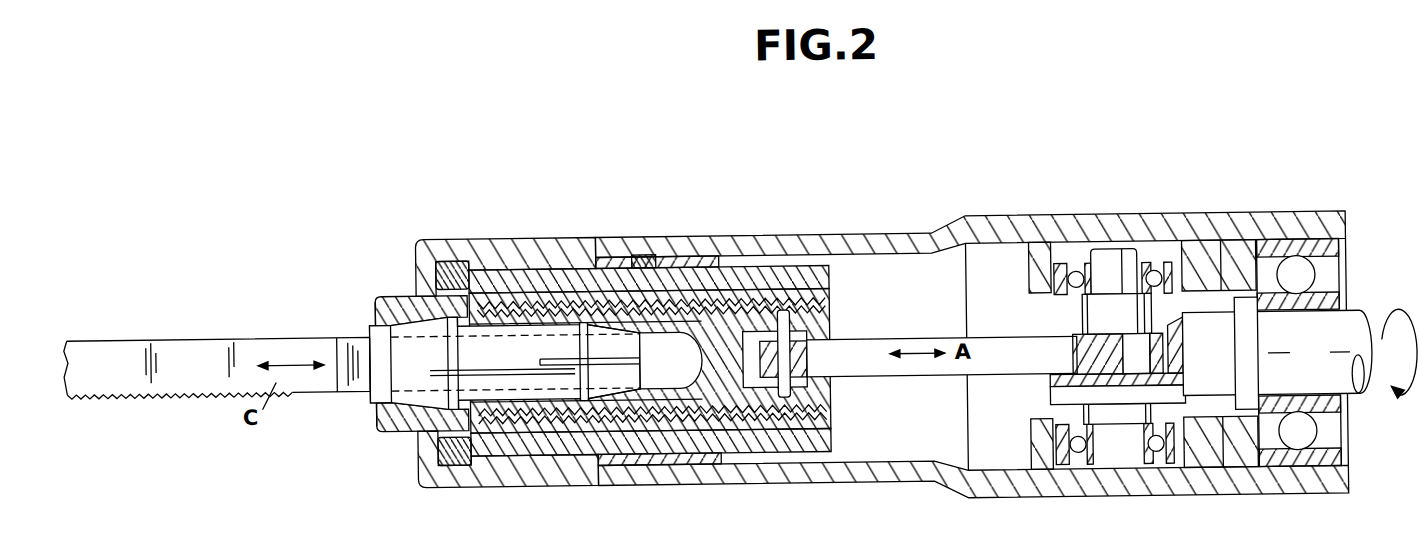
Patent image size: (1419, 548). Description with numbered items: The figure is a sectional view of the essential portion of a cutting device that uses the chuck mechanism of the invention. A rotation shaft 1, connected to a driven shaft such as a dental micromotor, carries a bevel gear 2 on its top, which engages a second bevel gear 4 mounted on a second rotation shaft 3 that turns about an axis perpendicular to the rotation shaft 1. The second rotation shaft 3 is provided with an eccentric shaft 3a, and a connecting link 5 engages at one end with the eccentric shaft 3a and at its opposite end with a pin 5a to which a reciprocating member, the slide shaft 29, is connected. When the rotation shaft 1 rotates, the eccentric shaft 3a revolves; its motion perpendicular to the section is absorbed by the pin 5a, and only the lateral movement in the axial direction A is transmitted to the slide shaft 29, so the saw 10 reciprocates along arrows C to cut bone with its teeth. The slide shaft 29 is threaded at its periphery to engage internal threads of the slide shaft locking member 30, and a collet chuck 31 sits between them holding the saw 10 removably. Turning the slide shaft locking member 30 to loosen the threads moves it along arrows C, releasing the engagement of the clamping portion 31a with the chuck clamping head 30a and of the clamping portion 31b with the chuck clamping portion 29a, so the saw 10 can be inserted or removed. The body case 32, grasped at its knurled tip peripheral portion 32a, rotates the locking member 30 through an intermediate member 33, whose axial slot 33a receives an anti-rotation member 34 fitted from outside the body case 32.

The rotation shaft 1 is at (1347, 337).
The bevel gear 2 is at (1178, 327).
The second rotation shaft 3 is at (1108, 272).
The eccentric shaft 3a is at (1130, 348).
The second bevel gear 4 is at (1068, 393).
The connecting link 5 is at (907, 344).
The pin 5a is at (786, 403).
The saw 10 is at (320, 337).
The slide shaft 29 is at (706, 320).
The chuck clamping portion 29a is at (606, 308).
The slide shaft locking member 30 is at (540, 302).
The chuck clamping head 30a is at (400, 300).
The collet chuck 31 is at (500, 379).
The clamping portion 31a is at (383, 388).
The clamping portion 31b is at (613, 380).
The body case 32 is at (482, 247).
The tip peripheral portion 32a is at (425, 241).
The intermediate member 33 is at (548, 452).
The slot 33a is at (770, 272).
The anti-rotation member 34 is at (652, 258).